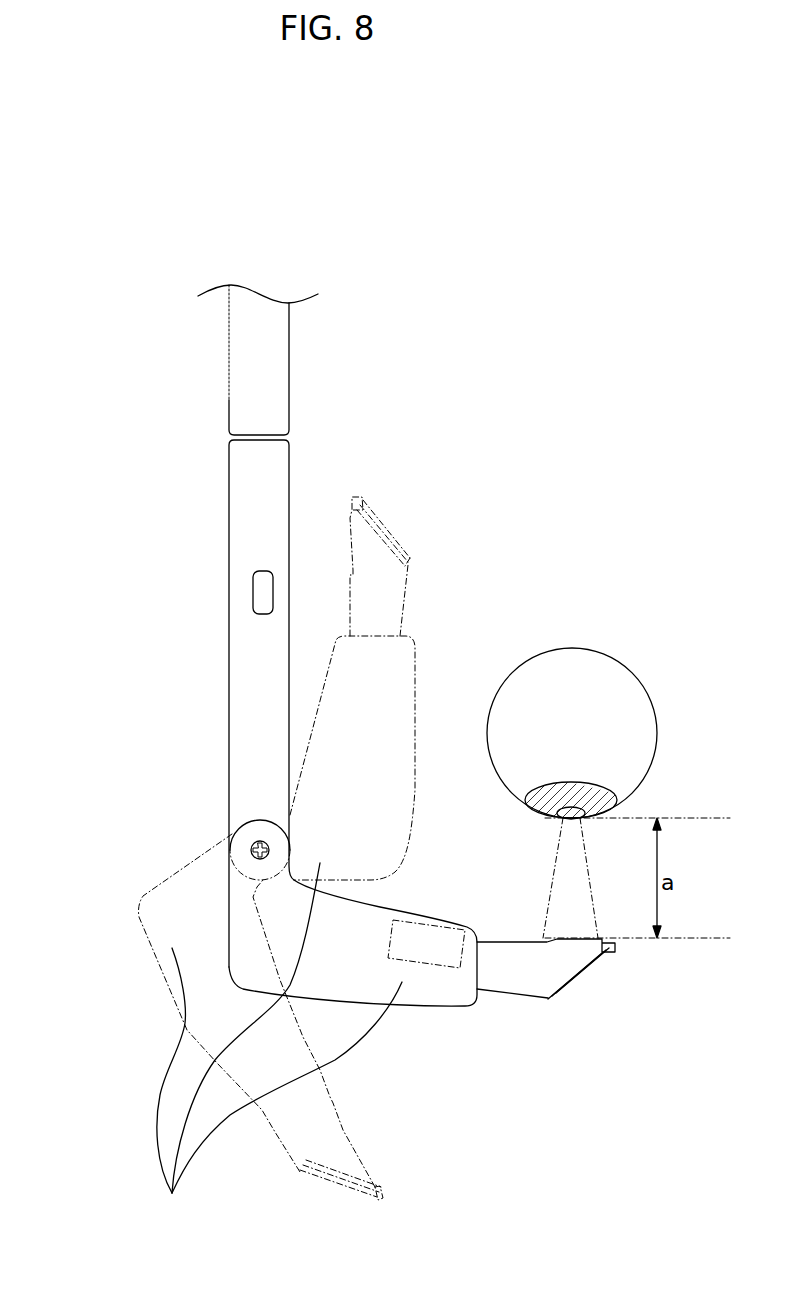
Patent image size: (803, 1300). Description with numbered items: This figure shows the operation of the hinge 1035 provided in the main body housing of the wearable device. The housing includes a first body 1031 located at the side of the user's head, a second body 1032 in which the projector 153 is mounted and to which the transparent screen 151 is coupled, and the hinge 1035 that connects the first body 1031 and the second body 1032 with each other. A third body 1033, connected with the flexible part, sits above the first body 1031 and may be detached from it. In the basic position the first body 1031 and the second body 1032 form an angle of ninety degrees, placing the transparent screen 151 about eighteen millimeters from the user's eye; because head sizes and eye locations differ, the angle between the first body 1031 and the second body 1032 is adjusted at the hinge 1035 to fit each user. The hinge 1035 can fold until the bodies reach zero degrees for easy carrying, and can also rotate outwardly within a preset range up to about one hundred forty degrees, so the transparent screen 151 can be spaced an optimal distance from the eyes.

The third body 1033 is at (245, 400).
The first body 1031 is at (243, 692).
The hinge 1035 is at (245, 850).
The transparent screen 151 is at (382, 552).
The projector 153 is at (442, 940).
The second body 1032 is at (277, 1044).